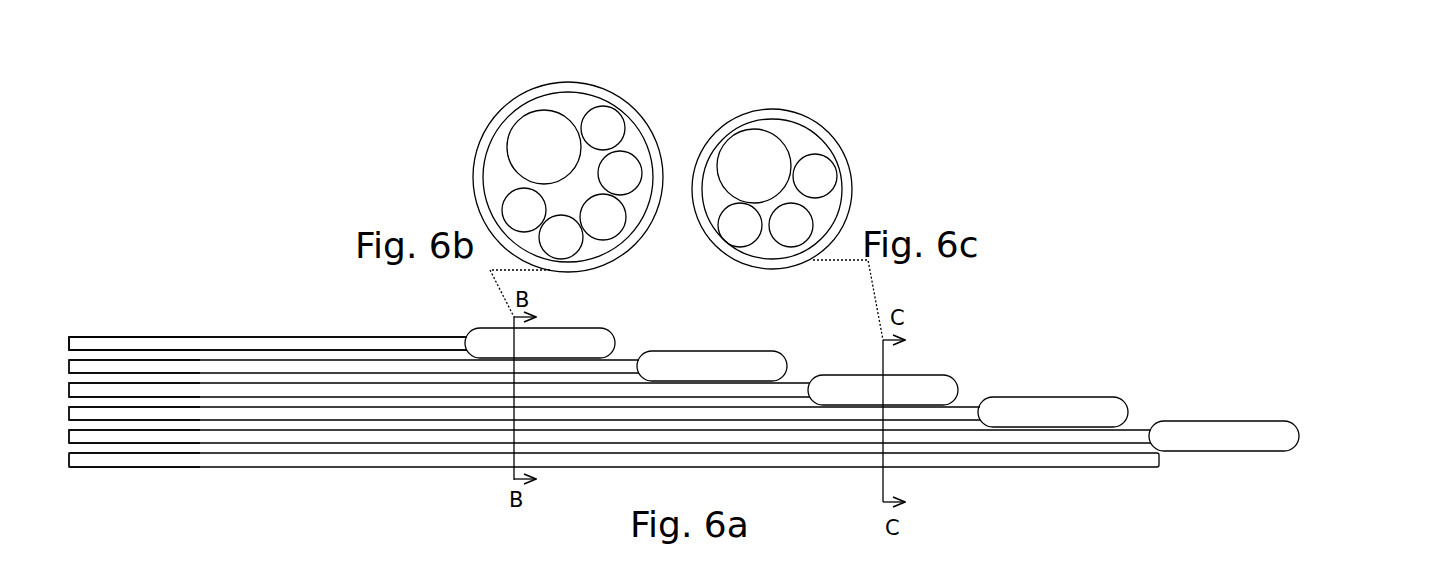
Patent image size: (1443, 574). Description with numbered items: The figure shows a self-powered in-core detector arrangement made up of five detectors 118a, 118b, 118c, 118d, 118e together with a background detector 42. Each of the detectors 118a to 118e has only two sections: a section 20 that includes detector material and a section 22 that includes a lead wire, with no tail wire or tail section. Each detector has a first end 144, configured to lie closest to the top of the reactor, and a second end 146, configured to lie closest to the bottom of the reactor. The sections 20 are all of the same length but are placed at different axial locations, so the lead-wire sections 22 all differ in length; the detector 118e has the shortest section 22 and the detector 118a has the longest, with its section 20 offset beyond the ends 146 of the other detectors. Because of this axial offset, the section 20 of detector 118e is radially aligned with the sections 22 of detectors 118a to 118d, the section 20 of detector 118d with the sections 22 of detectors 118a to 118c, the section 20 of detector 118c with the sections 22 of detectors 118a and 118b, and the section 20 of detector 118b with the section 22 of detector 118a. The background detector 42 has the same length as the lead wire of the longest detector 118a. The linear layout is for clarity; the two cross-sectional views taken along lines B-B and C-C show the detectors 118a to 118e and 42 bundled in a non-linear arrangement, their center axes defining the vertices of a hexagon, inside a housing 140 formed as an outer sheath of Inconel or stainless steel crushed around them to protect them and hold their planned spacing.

In FIG. 6a, the first end 144 is at (95, 307).
In FIG. 6a, the second end 146 is at (1317, 413).
In FIG. 6a, the section 22 is at (332, 338).
In FIG. 6a, the section 20 is at (590, 342).
In FIG. 6a, the background detector 42 is at (440, 472).
In FIG. 6b, the background detector 42 is at (596, 106).
In FIG. 6c, the background detector 42 is at (747, 248).
In FIG. 6a, the detector 118a is at (397, 453).
In FIG. 6b, the detector 118a is at (638, 151).
In FIG. 6c, the detector 118a is at (819, 223).
In FIG. 6a, the detector 118b is at (358, 423).
In FIG. 6b, the detector 118b is at (632, 218).
In FIG. 6c, the detector 118b is at (839, 165).
In FIG. 6a, the detector 118c is at (322, 399).
In FIG. 6b, the detector 118c is at (586, 250).
In FIG. 6c, the detector 118c is at (776, 129).
In FIG. 6a, the detector 118d is at (273, 376).
In FIG. 6b, the detector 118d is at (497, 203).
In FIG. 6a, the detector 118e is at (243, 355).
In FIG. 6b, the detector 118e is at (512, 121).
In FIG. 6b, the housing 140 is at (518, 86).
In FIG. 6c, the housing 140 is at (833, 122).